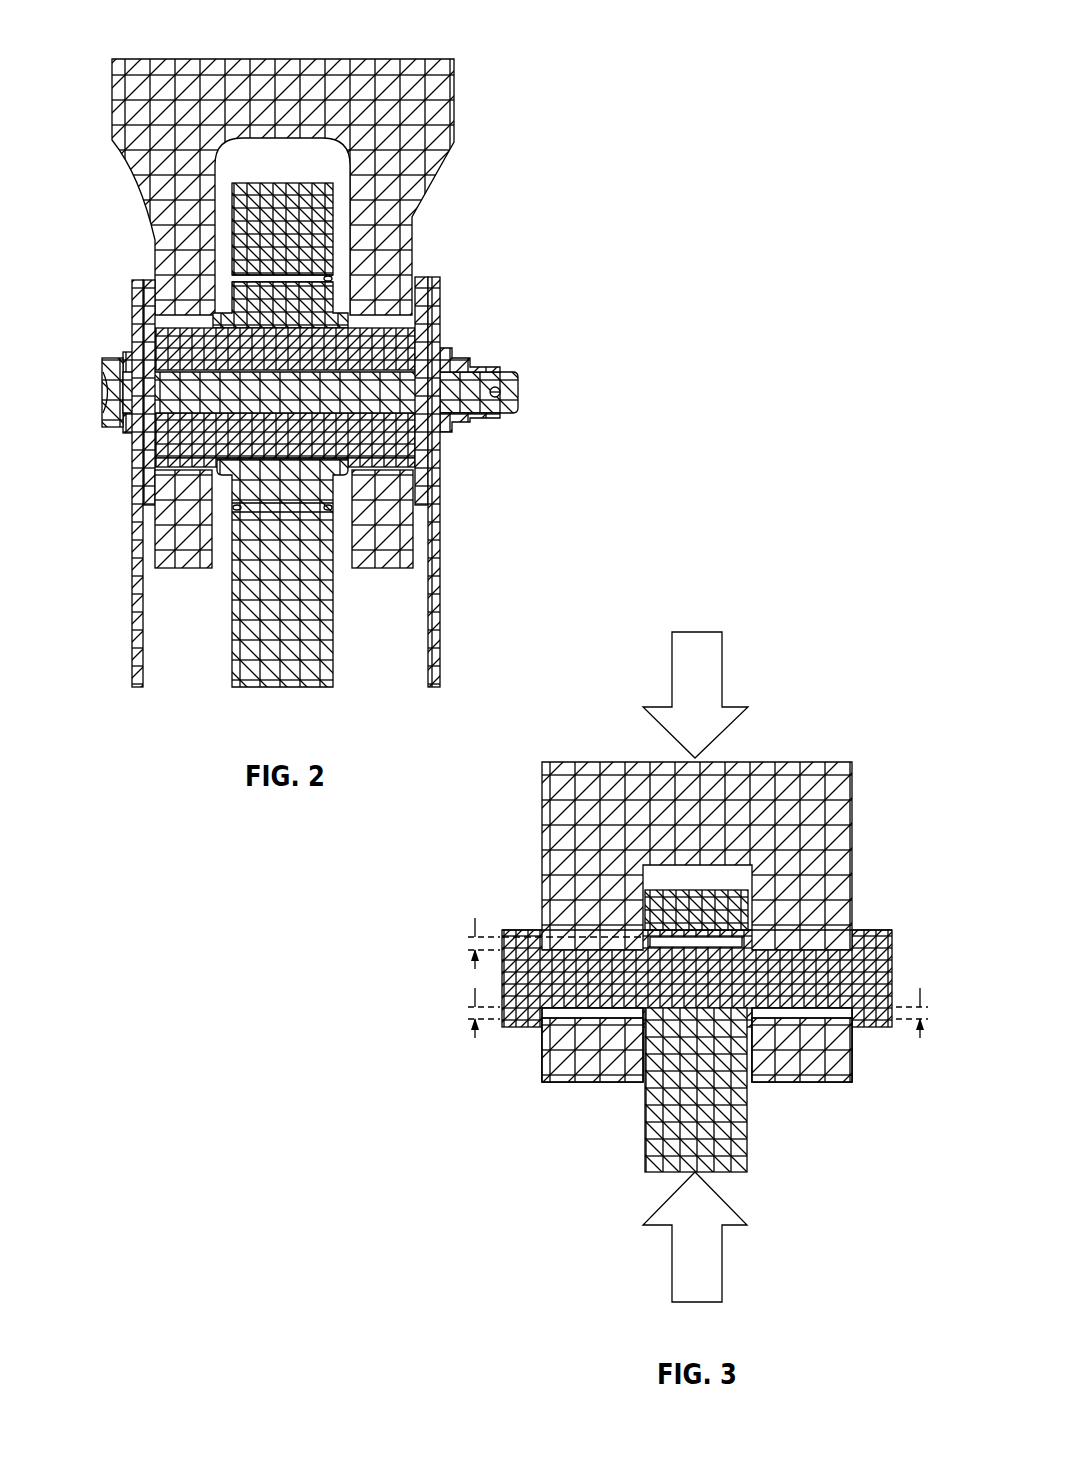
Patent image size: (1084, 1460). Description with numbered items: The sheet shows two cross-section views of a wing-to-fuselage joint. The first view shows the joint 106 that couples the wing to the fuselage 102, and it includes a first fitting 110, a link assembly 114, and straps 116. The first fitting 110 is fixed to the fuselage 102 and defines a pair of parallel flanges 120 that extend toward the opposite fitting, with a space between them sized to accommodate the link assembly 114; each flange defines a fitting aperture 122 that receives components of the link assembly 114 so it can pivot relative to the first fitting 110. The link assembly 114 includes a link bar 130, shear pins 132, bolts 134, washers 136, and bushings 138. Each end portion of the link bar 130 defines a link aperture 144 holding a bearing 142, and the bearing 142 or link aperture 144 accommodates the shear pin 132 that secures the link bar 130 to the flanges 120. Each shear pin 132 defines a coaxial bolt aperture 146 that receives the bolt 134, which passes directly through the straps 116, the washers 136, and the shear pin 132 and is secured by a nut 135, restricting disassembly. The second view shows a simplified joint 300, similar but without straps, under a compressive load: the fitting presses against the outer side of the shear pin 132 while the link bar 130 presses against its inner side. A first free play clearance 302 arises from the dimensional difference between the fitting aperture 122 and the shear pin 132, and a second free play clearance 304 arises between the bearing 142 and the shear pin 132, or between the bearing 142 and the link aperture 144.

In FIG. 3, the fuselage 102 is at (840, 810).
In FIG. 2, the joint 106 is at (302, 372).
In FIG. 2, the first fitting 110 is at (182, 235).
In FIG. 2, the link assembly 114 is at (302, 431).
In FIG. 2, the straps 116 is at (131, 614).
In FIG. 2, the flanges 120 is at (185, 570).
In FIG. 3, the flanges 120 is at (852, 1050).
In FIG. 2, the fitting aperture 122 is at (158, 456).
In FIG. 3, the fitting aperture 122 is at (578, 1015).
In FIG. 2, the link bar 130 is at (281, 657).
In FIG. 3, the link bar 130 is at (747, 1153).
In FIG. 2, the shear pin 132 is at (398, 437).
In FIG. 3, the shear pin 132 is at (820, 950).
In FIG. 2, the bolt 134 is at (140, 387).
In FIG. 2, the nut 135 is at (455, 360).
In FIG. 2, the washers 136 is at (147, 279).
In FIG. 2, the bushings 138 is at (415, 277).
In FIG. 2, the bearing 142 is at (303, 317).
In FIG. 2, the link aperture 144 is at (256, 276).
In FIG. 2, the bolt aperture 146 is at (384, 378).
In FIG. 3, the joint 300 is at (632, 688).
In FIG. 3, the first free play clearance 302 is at (470, 1026).
In FIG. 3, the second free play clearance 304 is at (472, 929).